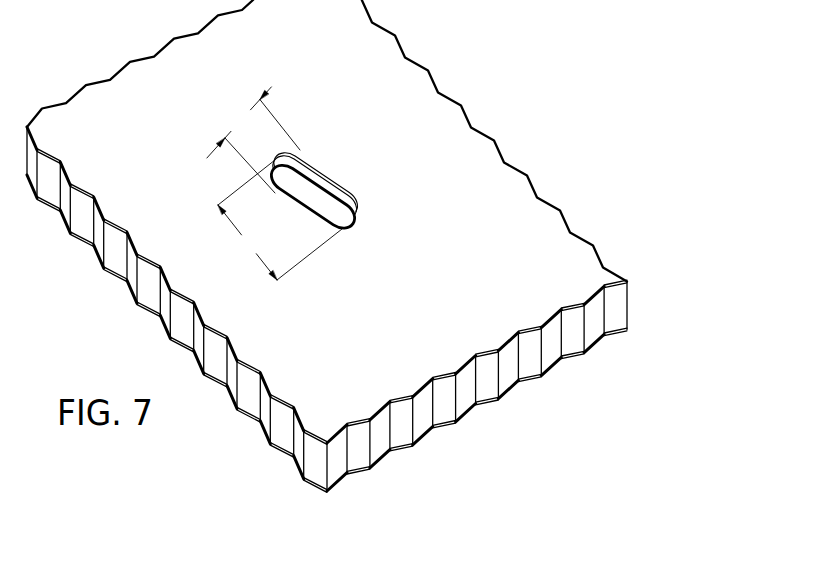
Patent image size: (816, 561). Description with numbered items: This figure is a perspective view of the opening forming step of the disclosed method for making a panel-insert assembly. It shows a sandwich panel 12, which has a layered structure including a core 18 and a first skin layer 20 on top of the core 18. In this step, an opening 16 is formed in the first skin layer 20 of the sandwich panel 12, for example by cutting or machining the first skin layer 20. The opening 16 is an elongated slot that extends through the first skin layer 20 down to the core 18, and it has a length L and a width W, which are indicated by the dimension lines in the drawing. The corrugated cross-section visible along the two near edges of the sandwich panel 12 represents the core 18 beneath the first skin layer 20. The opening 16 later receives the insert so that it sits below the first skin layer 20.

The sandwich panel 12 is at (548, 203).
The opening 16 is at (332, 189).
The core 18 is at (619, 307).
The first skin layer 20 is at (462, 118).